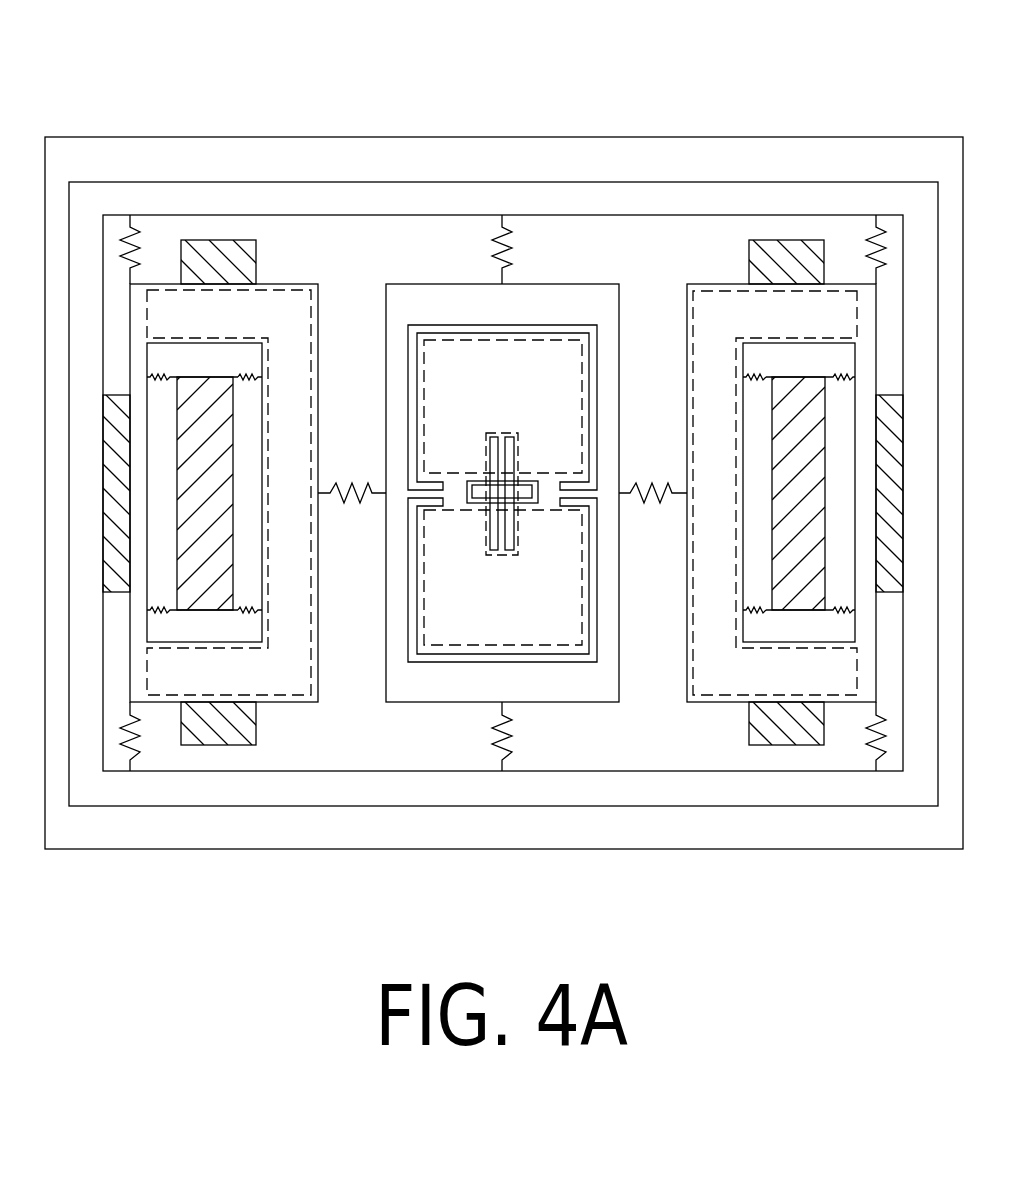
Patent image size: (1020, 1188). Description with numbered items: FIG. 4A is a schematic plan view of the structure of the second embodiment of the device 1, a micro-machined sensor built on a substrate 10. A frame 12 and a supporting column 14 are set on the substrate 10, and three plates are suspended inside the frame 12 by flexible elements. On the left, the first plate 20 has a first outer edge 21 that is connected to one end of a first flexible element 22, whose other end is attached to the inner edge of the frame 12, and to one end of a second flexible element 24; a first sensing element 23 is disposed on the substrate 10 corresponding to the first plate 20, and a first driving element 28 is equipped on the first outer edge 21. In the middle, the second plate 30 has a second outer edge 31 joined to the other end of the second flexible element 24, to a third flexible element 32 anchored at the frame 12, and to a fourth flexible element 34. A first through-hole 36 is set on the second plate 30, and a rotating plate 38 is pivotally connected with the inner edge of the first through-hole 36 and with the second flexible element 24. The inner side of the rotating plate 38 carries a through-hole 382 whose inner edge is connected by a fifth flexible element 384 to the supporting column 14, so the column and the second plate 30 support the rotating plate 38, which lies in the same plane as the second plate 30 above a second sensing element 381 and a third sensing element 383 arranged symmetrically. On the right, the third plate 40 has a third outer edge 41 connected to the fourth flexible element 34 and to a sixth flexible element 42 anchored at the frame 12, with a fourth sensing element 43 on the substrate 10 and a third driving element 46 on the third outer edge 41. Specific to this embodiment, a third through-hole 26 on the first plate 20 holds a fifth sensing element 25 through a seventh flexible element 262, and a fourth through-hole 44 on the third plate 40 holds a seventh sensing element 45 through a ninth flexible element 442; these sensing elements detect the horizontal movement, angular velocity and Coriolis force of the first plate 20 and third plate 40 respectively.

The image stabilization device 1 is at (900, 54).
The substrate 10 is at (92, 137).
The frame 12 is at (185, 182).
The supporting column 14 is at (525, 483).
The first plate 20 is at (255, 453).
The first outer edge 21 is at (318, 325).
The first flexible element 22 is at (140, 248).
The first sensing element 23 is at (290, 697).
The second flexible element 24 is at (355, 503).
The fifth sensing element 25 is at (185, 610).
The third through-hole 26 is at (262, 377).
The first driving element 28 is at (226, 240).
The second plate 30 is at (533, 447).
The second outer edge 31 is at (622, 325).
The third flexible element 32 is at (512, 258).
The fourth flexible element 34 is at (655, 503).
The first through-hole 36 is at (463, 328).
The rotating plate 38 is at (463, 648).
The third plate 40 is at (754, 453).
The third outer edge 41 is at (683, 662).
The sixth flexible element 42 is at (867, 257).
The fourth sensing element 43 is at (712, 695).
The fourth through-hole 44 is at (737, 378).
The seventh sensing element 45 is at (825, 615).
The third driving element 46 is at (785, 240).
The seventh flexible element 262 is at (240, 612).
The second sensing element 381 is at (555, 648).
The third through-hole 382 is at (492, 527).
The third sensing element 383 is at (552, 340).
The fifth flexible element 384 is at (490, 478).
The ninth flexible element 442 is at (763, 615).